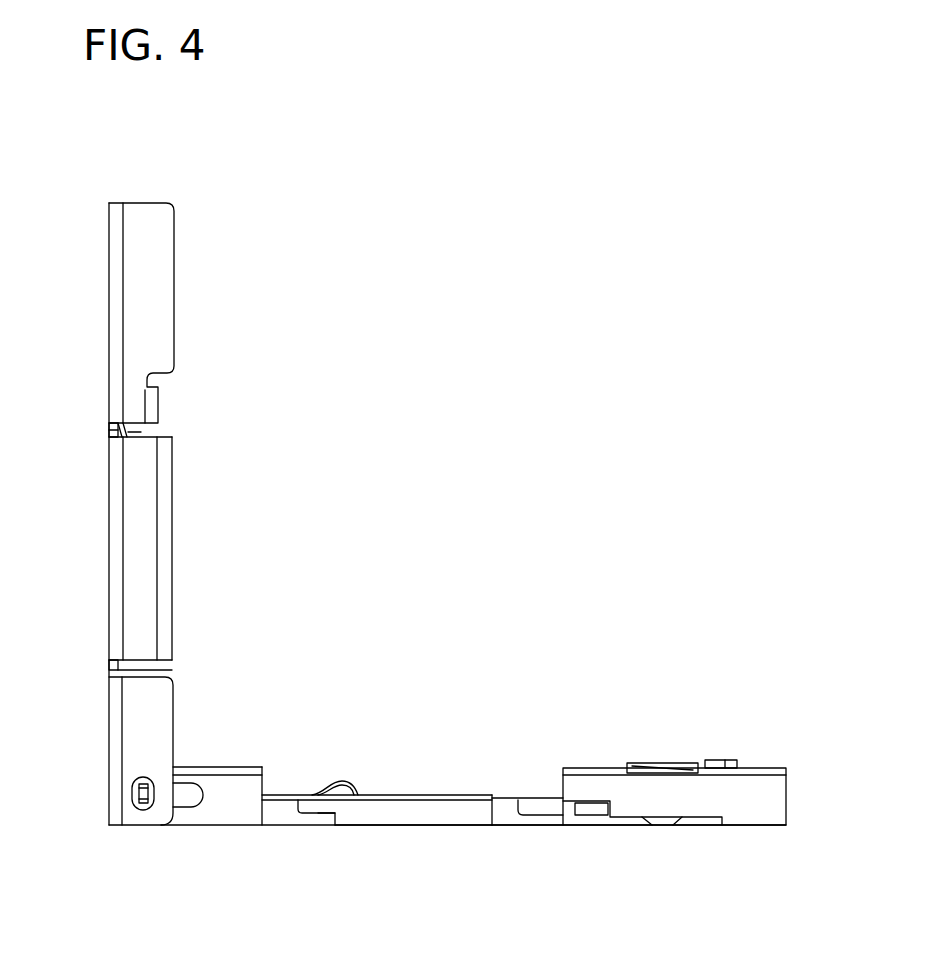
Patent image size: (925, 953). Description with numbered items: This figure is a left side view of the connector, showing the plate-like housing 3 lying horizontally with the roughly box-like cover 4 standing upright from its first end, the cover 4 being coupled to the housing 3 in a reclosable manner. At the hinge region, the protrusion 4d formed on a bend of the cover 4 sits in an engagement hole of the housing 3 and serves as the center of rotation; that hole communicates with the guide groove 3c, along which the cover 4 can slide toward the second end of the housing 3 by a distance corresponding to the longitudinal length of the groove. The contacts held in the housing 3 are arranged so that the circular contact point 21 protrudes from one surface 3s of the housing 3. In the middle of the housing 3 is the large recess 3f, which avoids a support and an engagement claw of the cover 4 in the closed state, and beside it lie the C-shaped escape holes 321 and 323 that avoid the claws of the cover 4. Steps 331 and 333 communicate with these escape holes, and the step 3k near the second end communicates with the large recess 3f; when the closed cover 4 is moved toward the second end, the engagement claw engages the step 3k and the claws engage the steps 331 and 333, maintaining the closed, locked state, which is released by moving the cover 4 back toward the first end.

The housing 3 is at (790, 796).
The cover 4 is at (98, 315).
The guide groove 3c is at (187, 790).
The large recess 3f is at (395, 813).
The step 3k is at (587, 810).
The one surface of the housing 3s is at (452, 795).
The protrusion 4d is at (133, 793).
The contact point 21 is at (347, 787).
The escape hole (small recess) 321 is at (283, 815).
The escape hole (small recess) 323 is at (505, 810).
The step 331 is at (318, 820).
The step 333 is at (528, 822).